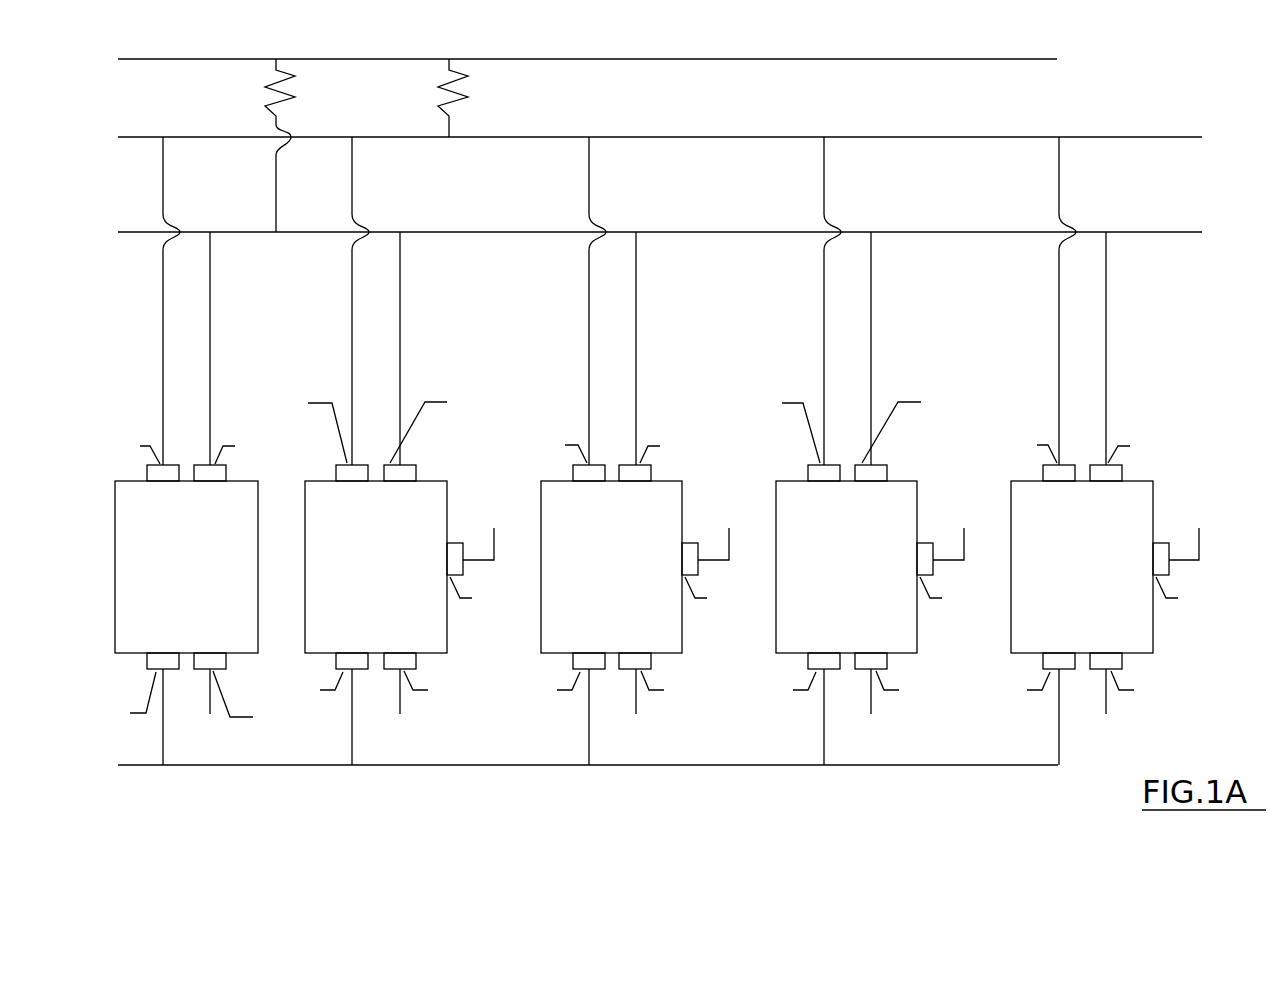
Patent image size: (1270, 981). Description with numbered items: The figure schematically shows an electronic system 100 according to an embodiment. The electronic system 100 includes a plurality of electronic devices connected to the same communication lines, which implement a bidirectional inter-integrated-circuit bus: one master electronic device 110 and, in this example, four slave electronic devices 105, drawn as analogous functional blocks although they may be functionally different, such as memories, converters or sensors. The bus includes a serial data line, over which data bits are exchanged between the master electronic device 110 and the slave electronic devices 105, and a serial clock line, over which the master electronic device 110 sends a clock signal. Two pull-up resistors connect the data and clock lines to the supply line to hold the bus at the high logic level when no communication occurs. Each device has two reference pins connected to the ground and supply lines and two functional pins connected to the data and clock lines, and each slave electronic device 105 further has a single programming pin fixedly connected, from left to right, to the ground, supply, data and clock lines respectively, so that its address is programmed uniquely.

The electronic system 100 is at (1130, 72).
The slave electronic device 105 is at (391, 561).
The master electronic device 110 is at (205, 561).